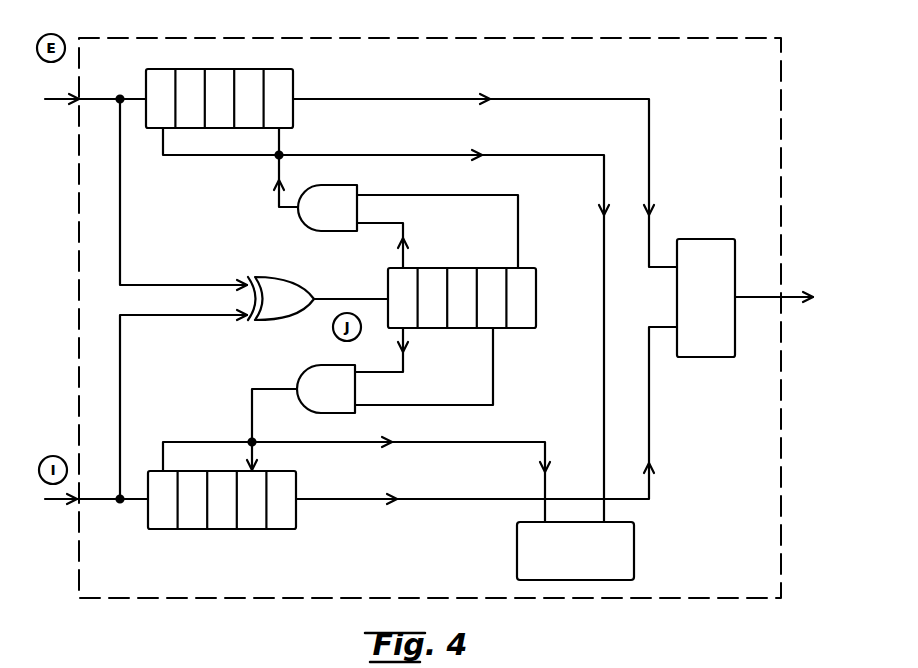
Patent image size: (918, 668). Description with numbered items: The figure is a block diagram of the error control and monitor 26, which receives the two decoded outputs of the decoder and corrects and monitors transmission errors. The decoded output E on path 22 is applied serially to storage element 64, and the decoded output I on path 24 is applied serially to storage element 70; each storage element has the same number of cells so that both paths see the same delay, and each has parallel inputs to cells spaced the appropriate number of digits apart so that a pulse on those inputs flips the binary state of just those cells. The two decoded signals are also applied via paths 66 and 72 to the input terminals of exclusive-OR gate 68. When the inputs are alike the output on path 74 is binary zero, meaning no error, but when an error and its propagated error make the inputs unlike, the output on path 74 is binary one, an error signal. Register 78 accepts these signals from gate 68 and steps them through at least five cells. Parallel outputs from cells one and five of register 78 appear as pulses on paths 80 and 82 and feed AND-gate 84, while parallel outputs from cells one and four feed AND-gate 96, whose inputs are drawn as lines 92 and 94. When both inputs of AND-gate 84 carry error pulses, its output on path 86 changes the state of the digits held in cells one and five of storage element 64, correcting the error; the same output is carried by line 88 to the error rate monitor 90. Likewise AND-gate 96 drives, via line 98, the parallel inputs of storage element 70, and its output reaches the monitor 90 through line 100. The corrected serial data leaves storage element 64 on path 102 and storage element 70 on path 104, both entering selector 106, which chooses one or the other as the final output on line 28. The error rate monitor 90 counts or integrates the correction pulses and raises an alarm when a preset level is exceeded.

The path 22 is at (66, 98).
The path 24 is at (62, 504).
The error control and monitor 26 is at (716, 73).
The output signal 28 is at (786, 297).
The storage element 64 is at (191, 69).
The path 66 is at (120, 152).
The exclusive-OR gate 68 is at (291, 277).
The storage element 70 is at (197, 530).
The path 72 is at (120, 398).
The path 74 is at (367, 299).
The register 78 is at (460, 268).
The path 80 is at (392, 222).
The path 82 is at (518, 229).
The AND-gate 84 is at (318, 185).
The path 86 is at (278, 163).
The signal line 88 is at (527, 154).
The error rate monitor 90 is at (634, 568).
The gate input line 92 is at (400, 374).
The gate input line 94 is at (493, 392).
The AND-gate 96 is at (347, 365).
The gate output line 98 is at (251, 426).
The signal line 100 is at (502, 440).
The path 102 is at (523, 97).
The path 104 is at (503, 497).
The selector 106 is at (685, 240).